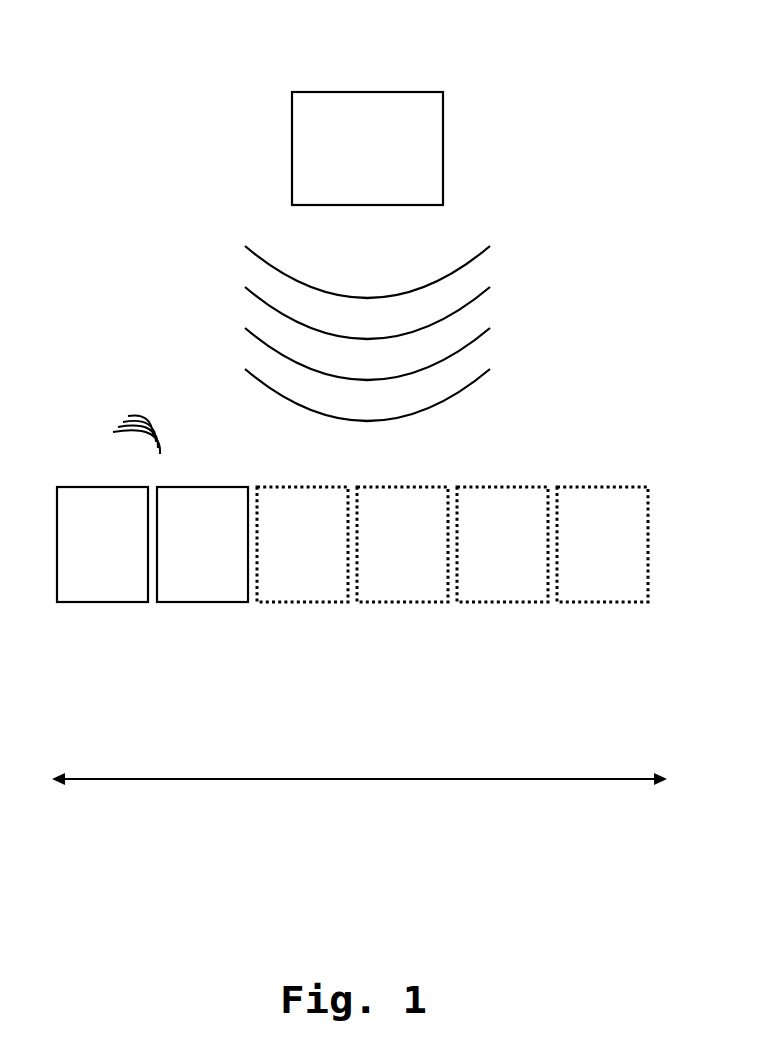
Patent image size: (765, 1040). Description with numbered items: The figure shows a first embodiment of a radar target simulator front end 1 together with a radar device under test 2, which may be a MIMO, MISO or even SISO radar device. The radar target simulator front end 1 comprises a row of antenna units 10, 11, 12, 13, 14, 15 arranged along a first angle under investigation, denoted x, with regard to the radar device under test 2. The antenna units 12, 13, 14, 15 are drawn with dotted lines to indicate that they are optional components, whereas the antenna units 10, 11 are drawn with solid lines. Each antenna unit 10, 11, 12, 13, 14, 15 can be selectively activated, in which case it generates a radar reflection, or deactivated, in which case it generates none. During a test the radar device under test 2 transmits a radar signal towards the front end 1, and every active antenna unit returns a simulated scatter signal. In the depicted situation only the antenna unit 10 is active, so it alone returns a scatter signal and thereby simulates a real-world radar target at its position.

The radar target simulator front end 1 is at (600, 175).
The radar device under test 2 is at (413, 92).
The antenna unit 10 is at (87, 602).
The antenna unit 11 is at (187, 602).
The antenna unit 12 is at (285, 603).
The antenna unit 13 is at (385, 603).
The antenna unit 14 is at (480, 603).
The antenna unit 15 is at (582, 603).